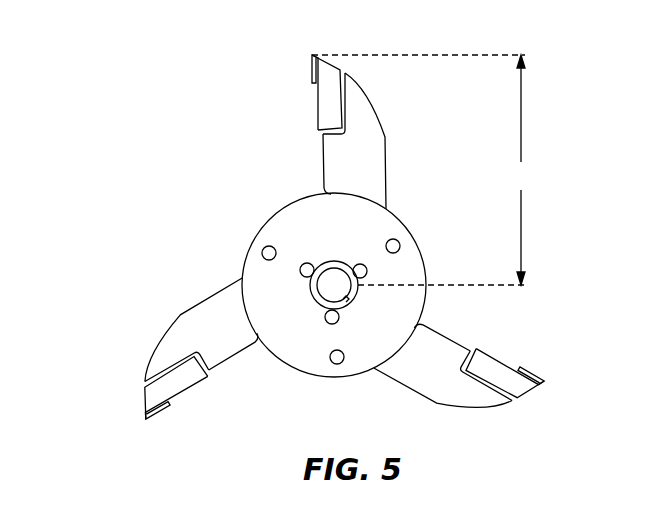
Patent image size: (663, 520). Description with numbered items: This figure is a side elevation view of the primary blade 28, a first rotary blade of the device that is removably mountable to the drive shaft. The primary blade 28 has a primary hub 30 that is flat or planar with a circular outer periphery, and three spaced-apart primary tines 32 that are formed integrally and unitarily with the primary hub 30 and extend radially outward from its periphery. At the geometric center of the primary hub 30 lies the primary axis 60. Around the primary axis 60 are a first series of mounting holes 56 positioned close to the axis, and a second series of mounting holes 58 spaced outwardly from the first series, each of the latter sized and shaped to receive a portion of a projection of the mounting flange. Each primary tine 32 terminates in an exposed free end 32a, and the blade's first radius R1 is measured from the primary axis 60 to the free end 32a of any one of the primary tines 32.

The primary blade 28 is at (203, 126).
The primary hub 30 is at (388, 230).
The primary tines 32 is at (376, 156).
The free end 32a is at (312, 54).
The first series of mounting holes 56 is at (306, 263).
The second series of mounting holes 58 is at (262, 251).
The primary axis 60 is at (334, 287).